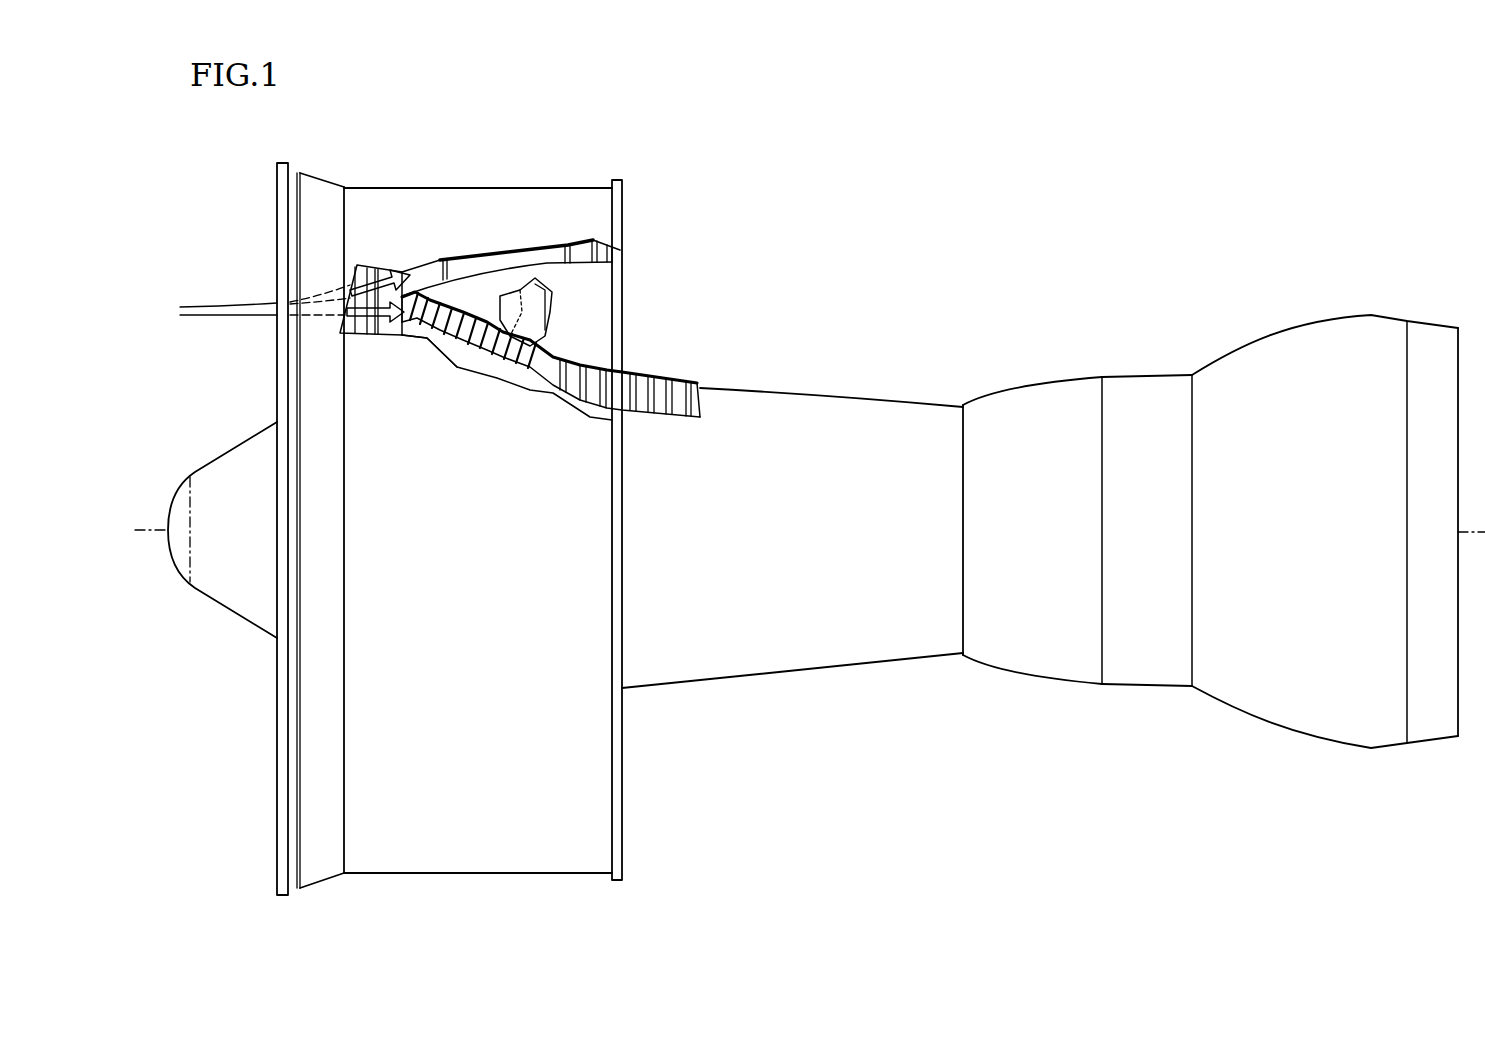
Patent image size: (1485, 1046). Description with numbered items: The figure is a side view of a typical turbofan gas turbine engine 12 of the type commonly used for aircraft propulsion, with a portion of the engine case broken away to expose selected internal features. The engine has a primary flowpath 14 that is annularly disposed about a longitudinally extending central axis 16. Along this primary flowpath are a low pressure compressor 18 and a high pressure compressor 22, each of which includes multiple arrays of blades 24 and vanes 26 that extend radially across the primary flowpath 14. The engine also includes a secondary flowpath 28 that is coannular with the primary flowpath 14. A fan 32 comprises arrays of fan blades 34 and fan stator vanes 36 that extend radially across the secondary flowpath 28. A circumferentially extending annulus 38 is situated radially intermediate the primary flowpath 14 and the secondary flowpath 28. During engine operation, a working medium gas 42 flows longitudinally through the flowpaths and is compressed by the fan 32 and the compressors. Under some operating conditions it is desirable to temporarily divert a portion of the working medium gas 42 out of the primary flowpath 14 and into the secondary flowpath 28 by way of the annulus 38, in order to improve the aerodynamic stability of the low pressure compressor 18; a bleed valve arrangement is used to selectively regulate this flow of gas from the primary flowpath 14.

The turbofan gas turbine engine 12 is at (730, 174).
The primary flowpath 14 is at (588, 380).
The central axis 16 is at (165, 528).
The low pressure compressor 18 is at (428, 340).
The high pressure compressor 22 is at (692, 372).
The blades 24 is at (452, 338).
The vanes 26 is at (487, 345).
The secondary flowpath 28 is at (405, 278).
The fan 32 is at (402, 188).
The fan blades 34 is at (362, 330).
The fan stator vanes 36 is at (473, 262).
The annulus 38 is at (540, 308).
The working medium gas 42 is at (220, 300).